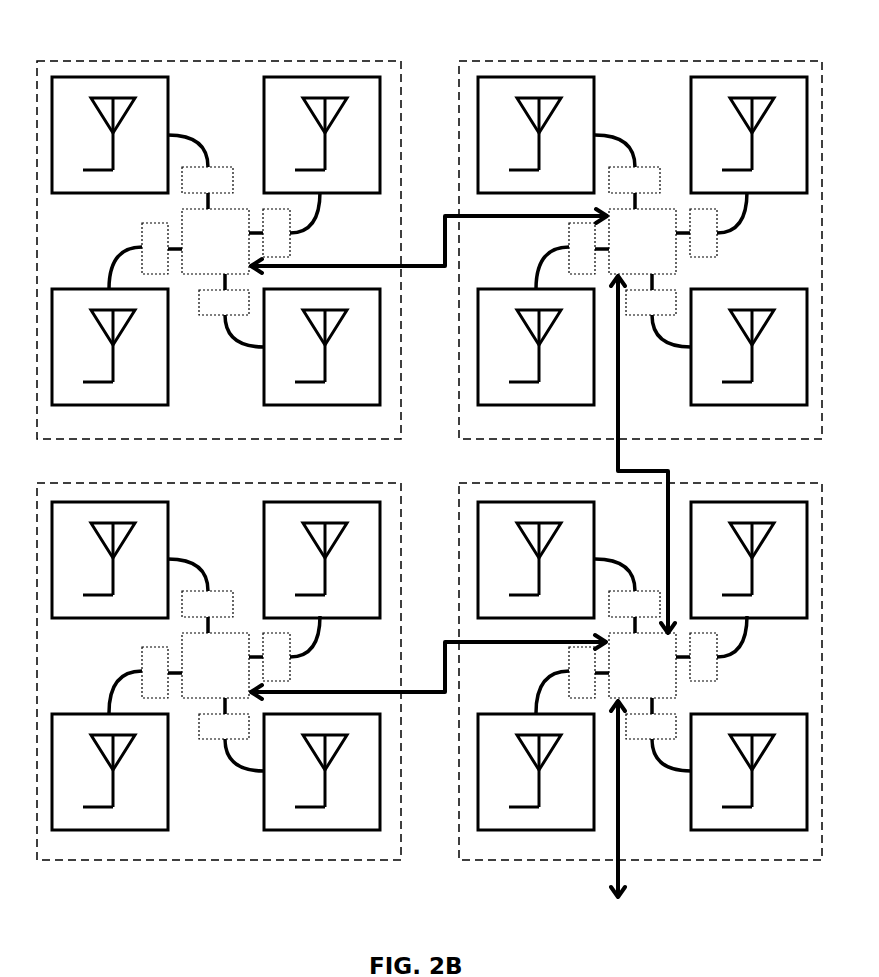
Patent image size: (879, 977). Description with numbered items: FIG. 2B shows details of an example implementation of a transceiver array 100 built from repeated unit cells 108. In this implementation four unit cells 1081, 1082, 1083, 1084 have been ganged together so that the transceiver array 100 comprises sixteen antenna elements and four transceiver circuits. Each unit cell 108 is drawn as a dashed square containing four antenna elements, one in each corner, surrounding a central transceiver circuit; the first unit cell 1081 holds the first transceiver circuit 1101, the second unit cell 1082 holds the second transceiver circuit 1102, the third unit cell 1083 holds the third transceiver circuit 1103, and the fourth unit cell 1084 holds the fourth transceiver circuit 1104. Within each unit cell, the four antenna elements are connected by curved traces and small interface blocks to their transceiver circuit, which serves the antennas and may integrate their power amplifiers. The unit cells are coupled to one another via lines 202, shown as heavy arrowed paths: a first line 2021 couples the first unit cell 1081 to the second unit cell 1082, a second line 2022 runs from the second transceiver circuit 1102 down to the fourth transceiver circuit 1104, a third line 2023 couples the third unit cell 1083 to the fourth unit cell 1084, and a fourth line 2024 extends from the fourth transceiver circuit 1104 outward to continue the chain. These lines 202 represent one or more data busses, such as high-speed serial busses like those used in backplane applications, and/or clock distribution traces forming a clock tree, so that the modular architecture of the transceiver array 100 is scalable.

The transceiver array 100 is at (429, 454).
The unit cell 108 is at (429, 450).
The first unit cell 1081 is at (96, 63).
The second unit cell 1082 is at (474, 63).
The third unit cell 1083 is at (96, 484).
The fourth unit cell 1084 is at (487, 484).
The first transceiver circuit 1101 is at (214, 241).
The second transceiver circuit 1102 is at (641, 241).
The third transceiver circuit 1103 is at (214, 665).
The fourth transceiver circuit 1104 is at (641, 665).
The lines 202 is at (463, 553).
The first line 2021 is at (443, 266).
The second line 2022 is at (617, 468).
The third line 2023 is at (443, 692).
The fourth line 2024 is at (617, 893).